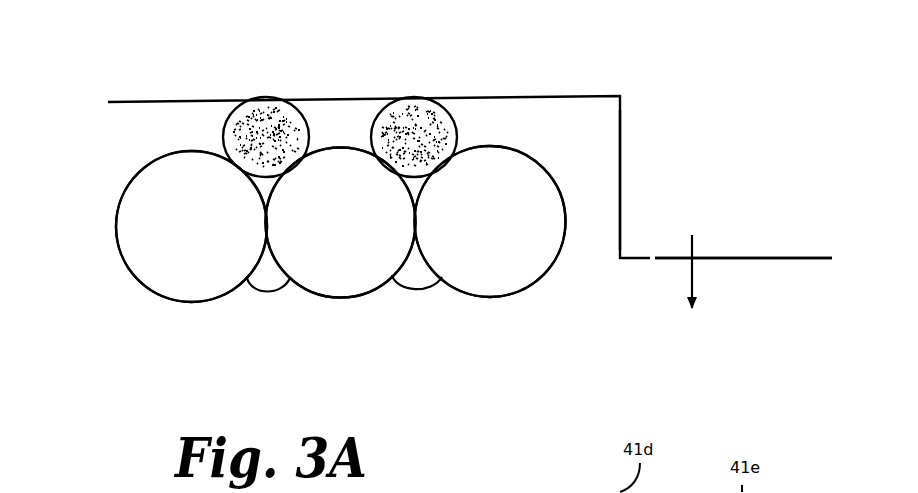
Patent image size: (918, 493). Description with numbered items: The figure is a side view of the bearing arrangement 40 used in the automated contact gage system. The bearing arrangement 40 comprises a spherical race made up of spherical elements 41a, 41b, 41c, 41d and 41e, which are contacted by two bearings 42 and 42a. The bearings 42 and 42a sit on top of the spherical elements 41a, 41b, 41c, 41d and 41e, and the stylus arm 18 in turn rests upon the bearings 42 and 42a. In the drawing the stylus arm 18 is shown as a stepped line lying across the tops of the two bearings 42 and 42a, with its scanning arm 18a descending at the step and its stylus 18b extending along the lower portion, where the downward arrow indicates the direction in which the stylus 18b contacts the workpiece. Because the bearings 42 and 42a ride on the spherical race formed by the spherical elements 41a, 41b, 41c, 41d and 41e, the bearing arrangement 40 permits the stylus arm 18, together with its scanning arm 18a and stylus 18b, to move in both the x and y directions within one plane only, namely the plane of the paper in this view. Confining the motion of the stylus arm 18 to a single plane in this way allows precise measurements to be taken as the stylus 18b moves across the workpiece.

The stylus arm 18 is at (514, 94).
The scanning arm 18a is at (628, 172).
The stylus 18b is at (789, 252).
The bearing arrangement 40 is at (117, 160).
The spherical element 41a is at (122, 261).
The spherical element 41b is at (346, 301).
The spherical element 41c is at (563, 238).
The spherical element 41d is at (267, 292).
The spherical element 41e is at (415, 290).
The bearing 42 is at (273, 117).
The bearing 42a is at (421, 107).